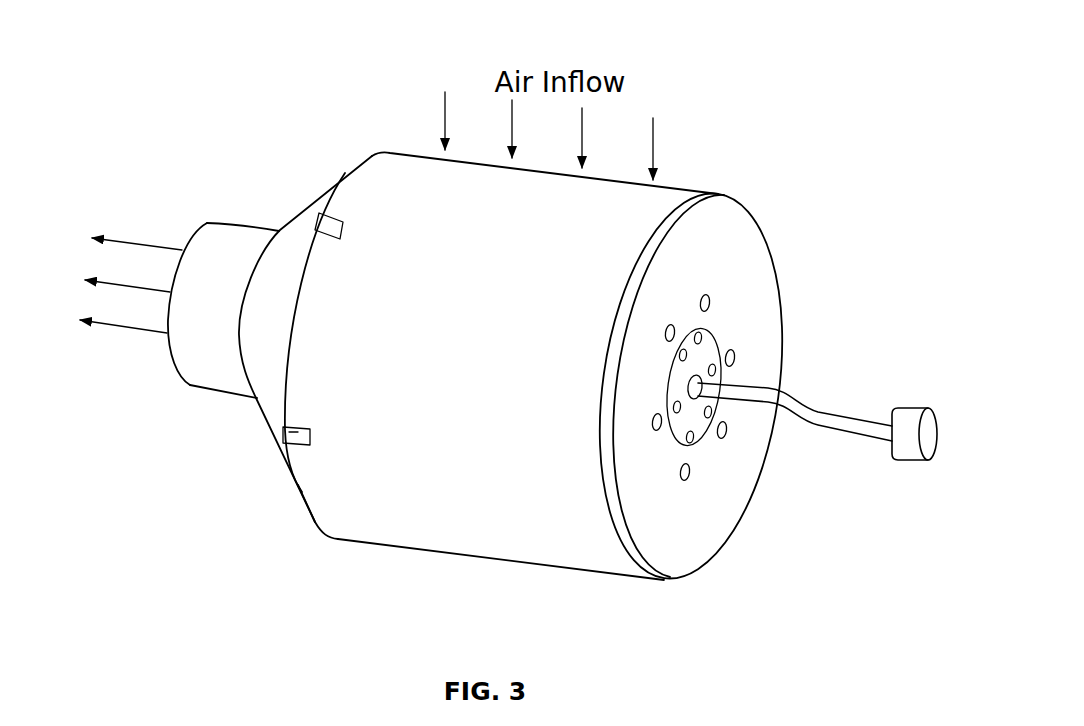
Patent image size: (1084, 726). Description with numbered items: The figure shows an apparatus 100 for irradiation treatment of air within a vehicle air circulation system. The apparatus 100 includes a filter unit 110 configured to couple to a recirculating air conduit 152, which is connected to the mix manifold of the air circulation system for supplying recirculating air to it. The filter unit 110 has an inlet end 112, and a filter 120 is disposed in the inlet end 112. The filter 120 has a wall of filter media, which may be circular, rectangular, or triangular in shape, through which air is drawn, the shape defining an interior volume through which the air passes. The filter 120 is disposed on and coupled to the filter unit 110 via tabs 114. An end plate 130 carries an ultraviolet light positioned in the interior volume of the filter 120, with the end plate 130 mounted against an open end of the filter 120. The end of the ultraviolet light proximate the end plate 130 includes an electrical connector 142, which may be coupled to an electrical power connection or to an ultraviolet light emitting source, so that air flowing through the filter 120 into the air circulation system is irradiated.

The apparatus 100 is at (782, 518).
The filter unit 110 is at (266, 400).
The inlet end 112 is at (311, 521).
The tabs 114 is at (283, 438).
The filter 120 is at (474, 499).
The end plate 130 is at (690, 541).
The electrical connector 142 is at (915, 405).
The recirculating air conduit 152 is at (190, 378).